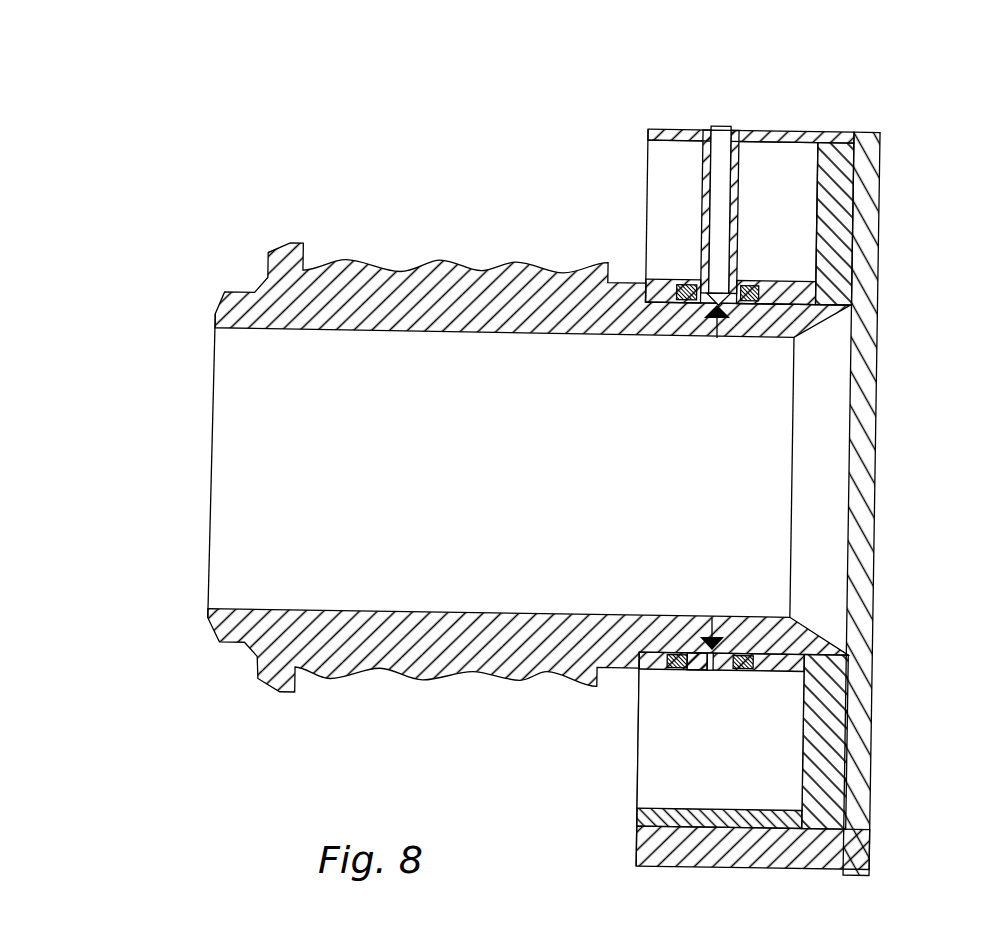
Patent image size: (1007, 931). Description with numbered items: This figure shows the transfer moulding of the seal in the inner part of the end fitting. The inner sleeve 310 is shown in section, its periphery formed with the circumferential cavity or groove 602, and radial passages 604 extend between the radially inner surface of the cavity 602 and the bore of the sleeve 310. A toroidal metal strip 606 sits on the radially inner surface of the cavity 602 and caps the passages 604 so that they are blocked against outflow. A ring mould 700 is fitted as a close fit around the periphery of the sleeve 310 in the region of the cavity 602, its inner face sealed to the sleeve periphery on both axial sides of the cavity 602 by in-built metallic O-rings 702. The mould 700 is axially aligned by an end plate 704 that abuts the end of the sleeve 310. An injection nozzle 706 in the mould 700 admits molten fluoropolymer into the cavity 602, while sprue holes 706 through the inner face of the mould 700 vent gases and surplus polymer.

The inner sleeve 310 is at (214, 307).
The ring mould 700 is at (642, 127).
The metallic O-rings 702 is at (752, 290).
The end plate 704 is at (873, 362).
The circumferential cavity or groove 602 is at (717, 338).
The radial passages 604 is at (722, 310).
The toroidal metal strip 606 is at (697, 657).
The injection nozzle 706 is at (720, 165).